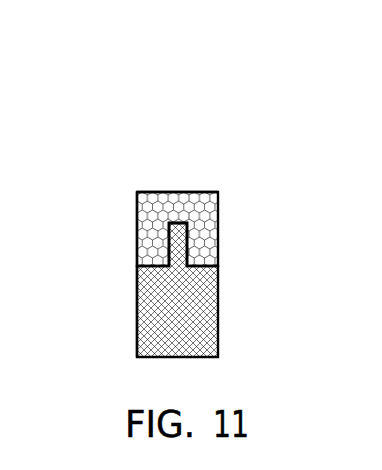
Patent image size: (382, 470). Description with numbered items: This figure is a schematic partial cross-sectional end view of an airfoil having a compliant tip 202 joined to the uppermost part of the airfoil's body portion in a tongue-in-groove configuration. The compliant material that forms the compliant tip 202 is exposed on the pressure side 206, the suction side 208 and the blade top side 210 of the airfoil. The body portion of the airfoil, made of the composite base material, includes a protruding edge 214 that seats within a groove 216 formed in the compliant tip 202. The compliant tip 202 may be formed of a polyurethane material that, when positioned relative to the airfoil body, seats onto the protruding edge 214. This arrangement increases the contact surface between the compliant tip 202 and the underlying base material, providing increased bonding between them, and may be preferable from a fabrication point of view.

The compliant tip 202 is at (218, 193).
The pressure side 206 is at (218, 303).
The suction side 208 is at (137, 303).
The blade top side 210 is at (177, 192).
The protruding edge 214 is at (188, 238).
The groove 216 is at (137, 243).